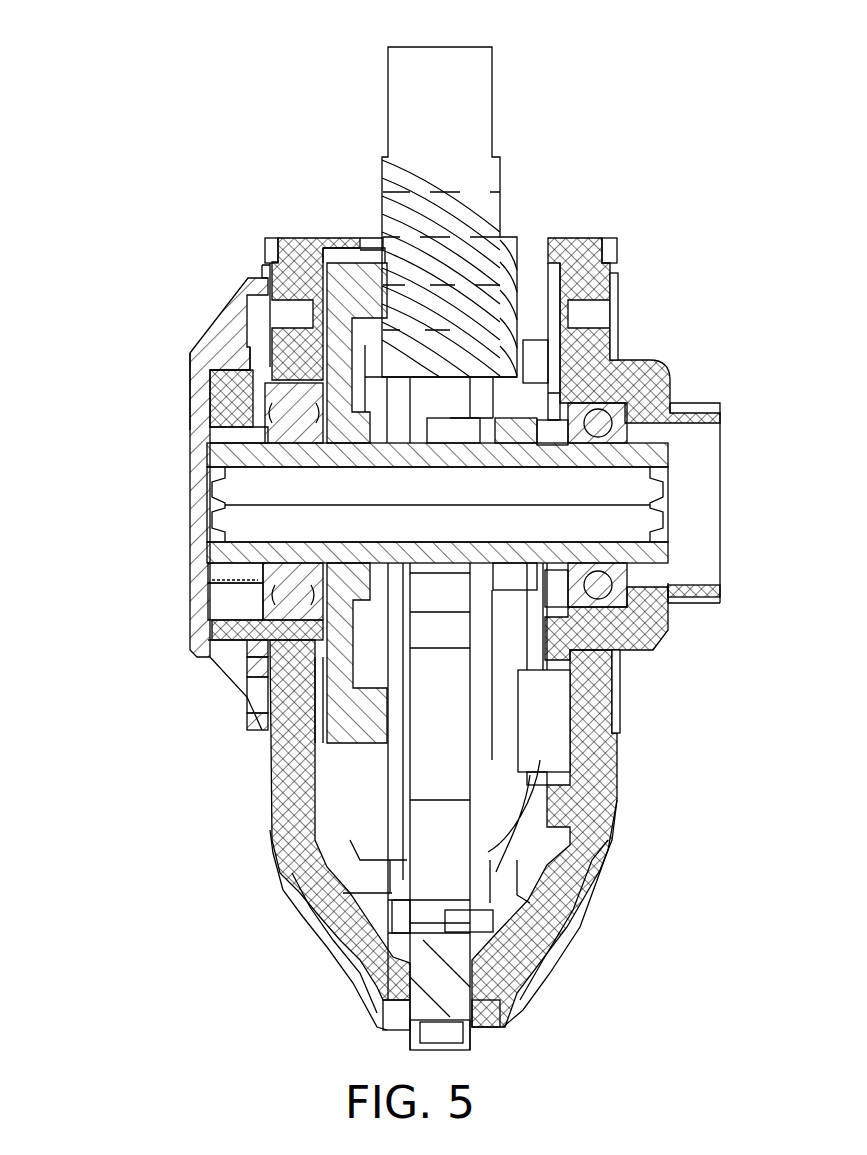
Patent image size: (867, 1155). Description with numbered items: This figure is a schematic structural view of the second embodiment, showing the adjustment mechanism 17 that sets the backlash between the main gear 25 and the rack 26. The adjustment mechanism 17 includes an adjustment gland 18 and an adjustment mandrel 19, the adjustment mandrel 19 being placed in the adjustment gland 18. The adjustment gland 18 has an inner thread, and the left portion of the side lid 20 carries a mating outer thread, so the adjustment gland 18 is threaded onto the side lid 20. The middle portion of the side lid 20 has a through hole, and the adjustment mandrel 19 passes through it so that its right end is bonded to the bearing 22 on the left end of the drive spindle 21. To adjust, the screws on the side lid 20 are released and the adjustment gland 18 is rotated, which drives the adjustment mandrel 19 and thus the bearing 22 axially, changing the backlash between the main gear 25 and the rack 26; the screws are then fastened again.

The adjustment mechanism 17 is at (214, 357).
The adjustment gland 18 is at (195, 647).
The adjustment mandrel 19 is at (235, 600).
The side lid 20 is at (267, 777).
The drive spindle 21 is at (365, 492).
The bearing 22 is at (270, 582).
The main gear 25 is at (280, 235).
The rack 26 is at (410, 183).